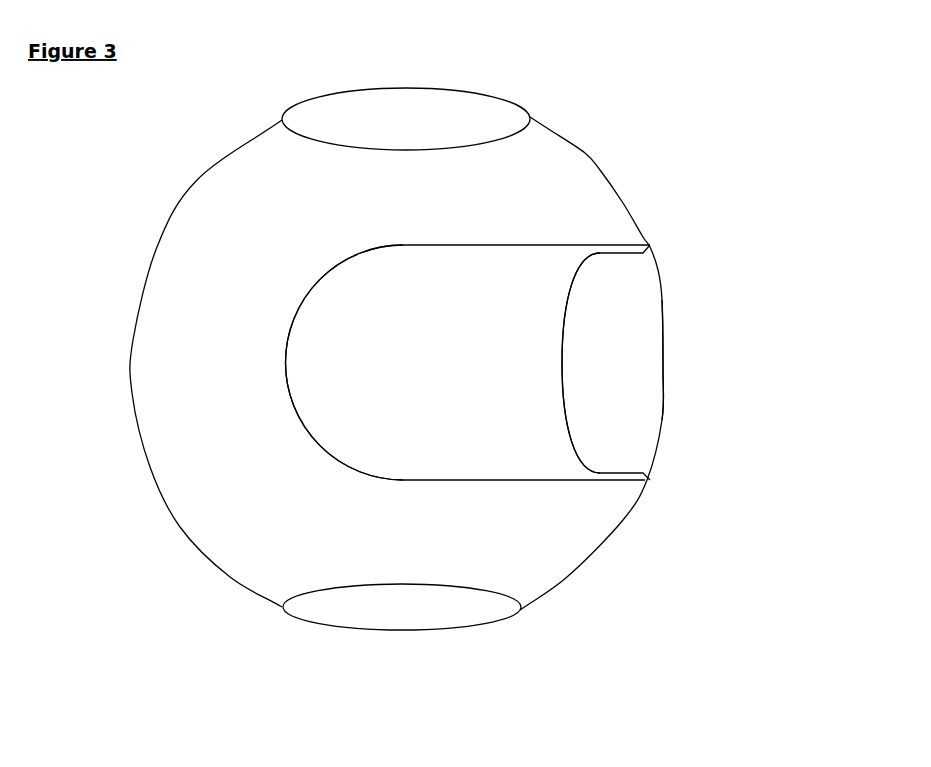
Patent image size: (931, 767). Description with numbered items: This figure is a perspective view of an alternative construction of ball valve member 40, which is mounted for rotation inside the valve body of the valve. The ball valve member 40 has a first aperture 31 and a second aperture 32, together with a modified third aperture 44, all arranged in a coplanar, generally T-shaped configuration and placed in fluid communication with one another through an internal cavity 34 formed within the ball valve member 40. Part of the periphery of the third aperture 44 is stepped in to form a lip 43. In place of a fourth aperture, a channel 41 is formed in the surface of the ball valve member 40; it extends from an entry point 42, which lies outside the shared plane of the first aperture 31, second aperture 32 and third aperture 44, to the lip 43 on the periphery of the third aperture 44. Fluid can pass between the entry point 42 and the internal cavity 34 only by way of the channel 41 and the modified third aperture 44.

The first aperture 31 is at (418, 103).
The second aperture 32 is at (446, 616).
The internal cavity 34 is at (598, 348).
The ball valve member 40 is at (573, 163).
The channel 41 is at (495, 362).
The entry point 42 is at (335, 364).
The lip 43 is at (565, 408).
The third aperture 44 is at (653, 378).